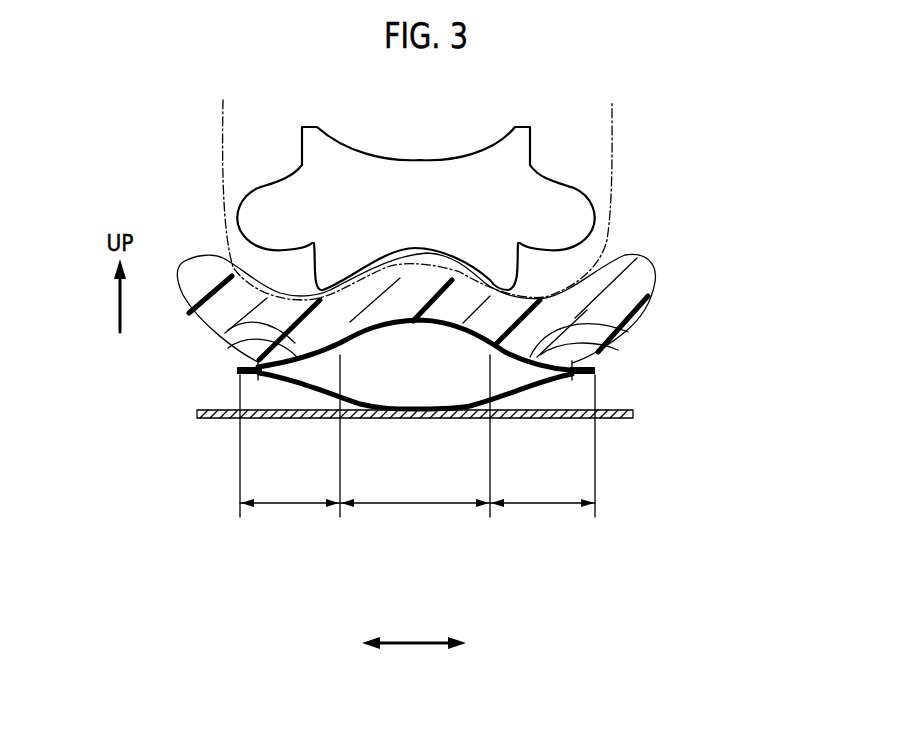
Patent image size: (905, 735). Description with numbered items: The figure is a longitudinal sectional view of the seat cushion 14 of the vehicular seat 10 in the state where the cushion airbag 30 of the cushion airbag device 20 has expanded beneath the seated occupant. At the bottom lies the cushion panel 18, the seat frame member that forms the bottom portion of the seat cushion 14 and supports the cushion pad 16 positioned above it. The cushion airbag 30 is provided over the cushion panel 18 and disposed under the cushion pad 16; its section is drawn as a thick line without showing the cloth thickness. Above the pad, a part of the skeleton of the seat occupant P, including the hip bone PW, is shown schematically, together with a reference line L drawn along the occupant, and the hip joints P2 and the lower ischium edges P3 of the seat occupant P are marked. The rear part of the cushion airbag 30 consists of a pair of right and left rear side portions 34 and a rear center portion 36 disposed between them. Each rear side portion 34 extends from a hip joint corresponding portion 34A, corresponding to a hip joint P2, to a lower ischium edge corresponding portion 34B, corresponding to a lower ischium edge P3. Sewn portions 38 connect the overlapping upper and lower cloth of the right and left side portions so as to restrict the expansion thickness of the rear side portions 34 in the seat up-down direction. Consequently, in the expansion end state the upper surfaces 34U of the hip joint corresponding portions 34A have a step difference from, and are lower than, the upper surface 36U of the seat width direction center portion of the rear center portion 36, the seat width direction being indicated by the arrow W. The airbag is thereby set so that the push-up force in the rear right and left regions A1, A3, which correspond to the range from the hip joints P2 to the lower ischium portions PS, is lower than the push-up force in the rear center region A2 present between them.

The vehicular seat 10 is at (439, 346).
The seat cushion 14 is at (439, 339).
The cushion pad 16 is at (640, 297).
The cushion panel 18 is at (444, 419).
The cushion airbag device 20 is at (431, 339).
The cushion airbag 30 is at (415, 339).
The rear side portions 34 is at (415, 379).
The hip joint corresponding portions 34A is at (607, 320).
The lower ischium edge corresponding portions 34B is at (304, 399).
The upper surfaces of the hip joint corresponding portions 34U is at (600, 348).
The rear center portion 36 is at (414, 339).
The upper surface of the rear center portion 36U is at (408, 318).
The sewn portions 38 is at (240, 372).
The seat occupant P is at (615, 134).
The hip bone PW is at (447, 148).
The hip joints P2 is at (257, 213).
The lower ischium edges P3 is at (320, 288).
The lower ischium portions PS is at (303, 285).
The foot sole line L is at (615, 183).
The rear right and left region A1 is at (292, 504).
The rear center region A2 is at (417, 504).
The rear right and left region A3 is at (547, 504).
The shoe width direction W is at (416, 640).